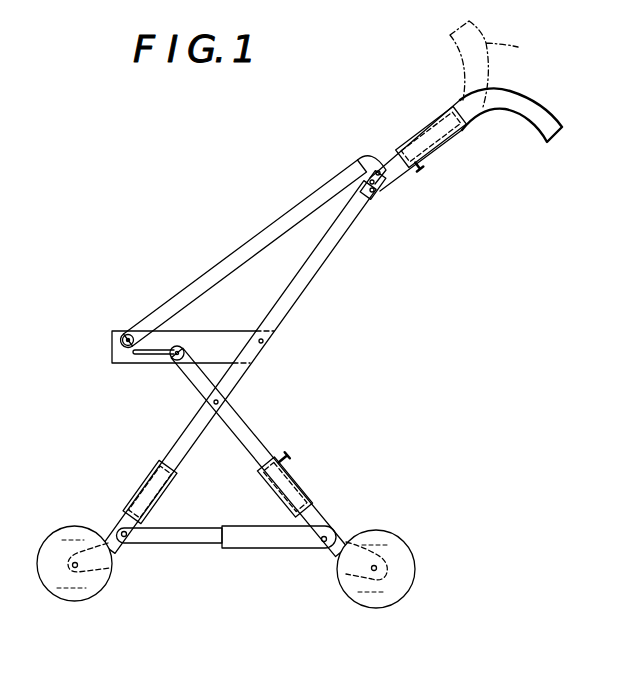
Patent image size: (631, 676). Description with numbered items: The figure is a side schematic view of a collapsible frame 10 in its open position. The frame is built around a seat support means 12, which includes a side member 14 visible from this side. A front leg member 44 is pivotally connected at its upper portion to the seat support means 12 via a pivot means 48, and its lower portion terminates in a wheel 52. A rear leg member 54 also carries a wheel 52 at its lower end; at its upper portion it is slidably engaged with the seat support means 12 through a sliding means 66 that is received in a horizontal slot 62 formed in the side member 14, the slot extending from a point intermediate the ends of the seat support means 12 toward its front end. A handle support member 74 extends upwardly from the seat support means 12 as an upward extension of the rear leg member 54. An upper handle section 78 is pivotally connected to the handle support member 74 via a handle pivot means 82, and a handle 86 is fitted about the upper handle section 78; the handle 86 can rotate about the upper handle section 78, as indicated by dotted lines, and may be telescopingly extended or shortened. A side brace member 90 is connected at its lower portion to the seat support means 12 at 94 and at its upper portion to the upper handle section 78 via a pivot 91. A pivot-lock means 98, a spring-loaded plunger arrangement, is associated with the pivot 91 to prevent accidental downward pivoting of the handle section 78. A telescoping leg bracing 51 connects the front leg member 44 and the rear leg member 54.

The collapsible frame 10 is at (65, 414).
The seat support means 12 is at (104, 353).
The side member 14 is at (242, 333).
The front leg member 44 is at (186, 453).
The pivot means 48 is at (263, 343).
The telescoping leg bracing 51 is at (180, 538).
The wheels 52 is at (70, 597).
The rear leg member 54 is at (255, 430).
The horizontal slot 62 is at (150, 356).
The sliding means 66 is at (180, 344).
The handle support member 74 is at (320, 270).
The upper handle section 78 is at (440, 117).
The handle pivot means 82 is at (373, 197).
The handle 86 is at (512, 93).
The side brace member 90 is at (244, 250).
The pivot 91 is at (383, 170).
The connection point 94 is at (128, 334).
The pivot-lock means 98 is at (352, 158).